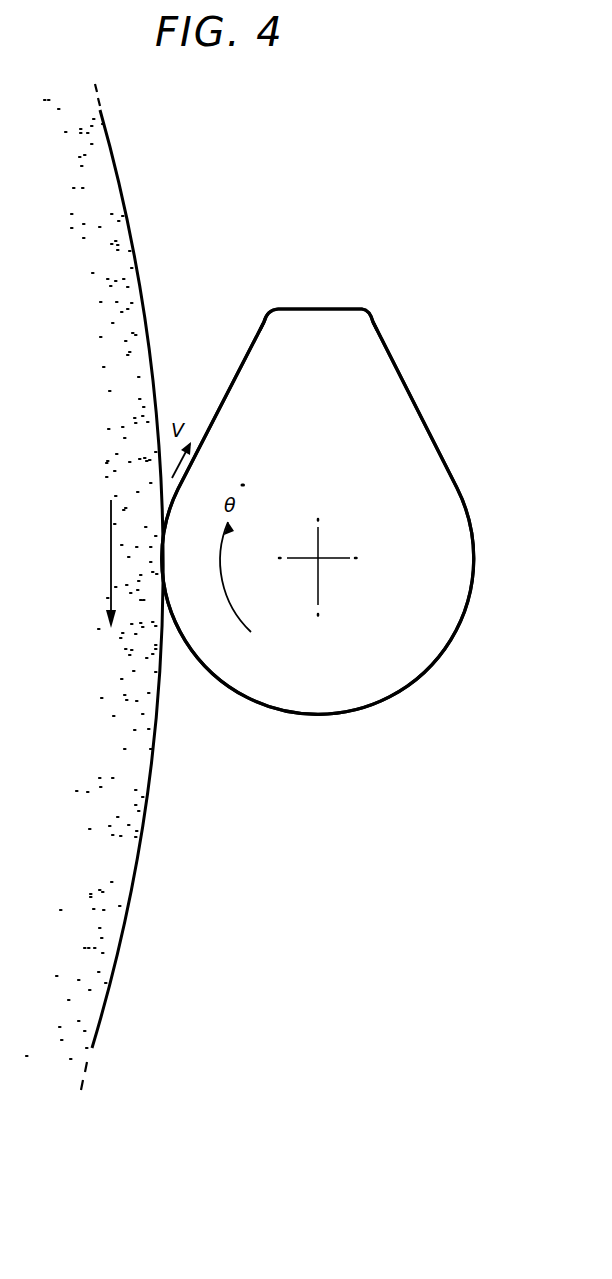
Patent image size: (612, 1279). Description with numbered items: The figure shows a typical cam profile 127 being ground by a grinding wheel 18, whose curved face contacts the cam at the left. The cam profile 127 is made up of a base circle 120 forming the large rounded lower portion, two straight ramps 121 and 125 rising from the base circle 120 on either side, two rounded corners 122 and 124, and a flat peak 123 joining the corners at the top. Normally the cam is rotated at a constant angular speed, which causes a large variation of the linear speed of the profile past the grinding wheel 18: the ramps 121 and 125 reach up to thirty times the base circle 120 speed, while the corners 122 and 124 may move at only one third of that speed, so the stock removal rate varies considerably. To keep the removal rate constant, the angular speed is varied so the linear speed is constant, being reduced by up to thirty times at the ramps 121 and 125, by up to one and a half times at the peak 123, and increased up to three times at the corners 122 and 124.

The grinding wheel 18 is at (118, 865).
The base circle 120 is at (366, 706).
The ramp 121 is at (228, 388).
The corner 122 is at (262, 312).
The peak 123 is at (300, 306).
The corner 124 is at (374, 312).
The ramp 125 is at (413, 390).
The cam profile 127 is at (434, 622).